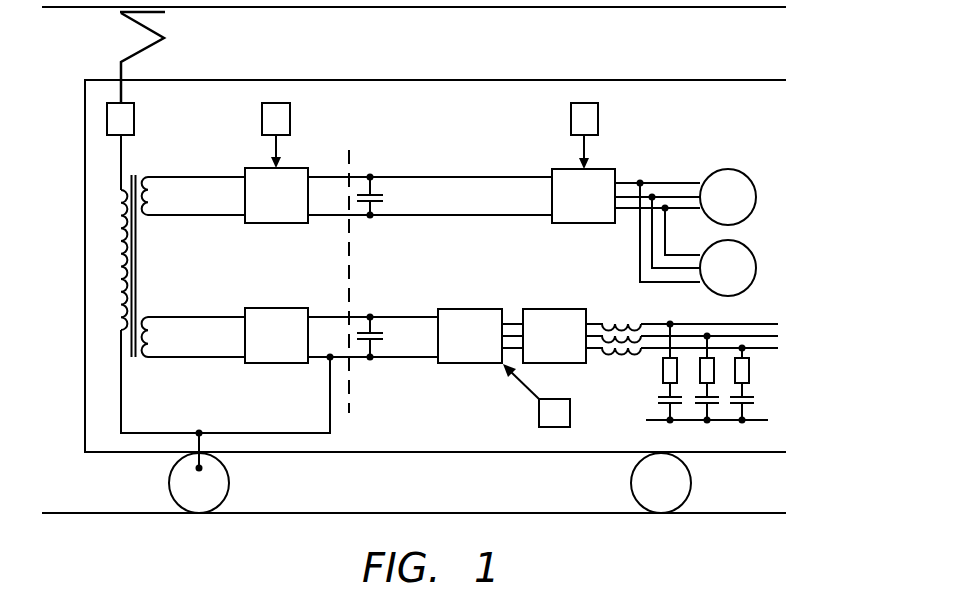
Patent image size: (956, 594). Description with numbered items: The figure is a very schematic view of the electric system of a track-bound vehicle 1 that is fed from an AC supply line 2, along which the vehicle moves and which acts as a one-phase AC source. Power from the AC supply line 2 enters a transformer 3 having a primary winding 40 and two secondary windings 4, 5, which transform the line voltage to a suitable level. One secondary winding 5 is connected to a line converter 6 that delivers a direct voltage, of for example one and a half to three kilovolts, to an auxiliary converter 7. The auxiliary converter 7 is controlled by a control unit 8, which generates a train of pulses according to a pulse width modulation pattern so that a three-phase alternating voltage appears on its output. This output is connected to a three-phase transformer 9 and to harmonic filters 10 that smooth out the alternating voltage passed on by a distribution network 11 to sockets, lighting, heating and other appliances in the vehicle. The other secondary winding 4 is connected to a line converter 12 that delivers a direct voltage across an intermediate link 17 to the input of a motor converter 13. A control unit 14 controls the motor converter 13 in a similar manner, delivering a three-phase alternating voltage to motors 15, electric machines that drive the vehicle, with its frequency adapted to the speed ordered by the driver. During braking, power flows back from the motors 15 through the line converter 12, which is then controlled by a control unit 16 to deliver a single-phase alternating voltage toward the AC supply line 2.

The track-bound vehicle 1 is at (436, 80).
The AC supply line 2 is at (276, 8).
The transformer 3 is at (136, 236).
The secondary winding 4 is at (147, 194).
The secondary winding 5 is at (147, 333).
The line converter 6 is at (280, 364).
The auxiliary converter 7 is at (451, 364).
The control unit 8 is at (539, 416).
The three-phase transformer 9 is at (555, 309).
The harmonic filters 10 is at (647, 367).
The distribution network 11 is at (746, 323).
The line converter 12 is at (298, 168).
The motor converter 13 is at (604, 169).
The control unit 14 is at (571, 120).
The motors 15 is at (747, 168).
The control unit 16 is at (262, 118).
The DC intermediate circuit 17 is at (352, 157).
The primary winding 40 is at (119, 267).